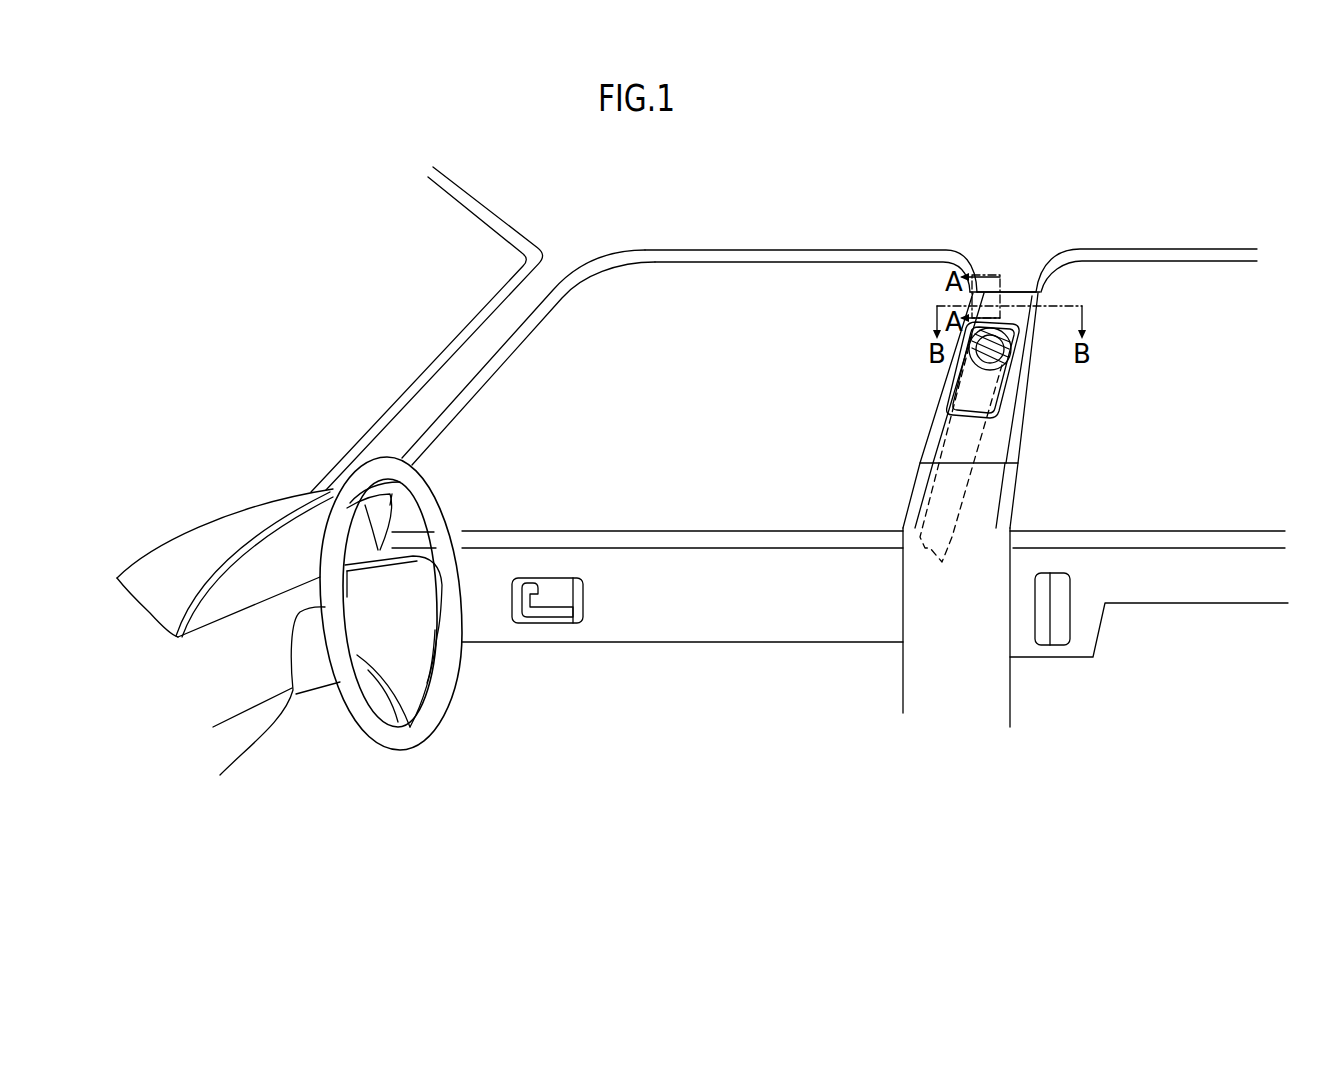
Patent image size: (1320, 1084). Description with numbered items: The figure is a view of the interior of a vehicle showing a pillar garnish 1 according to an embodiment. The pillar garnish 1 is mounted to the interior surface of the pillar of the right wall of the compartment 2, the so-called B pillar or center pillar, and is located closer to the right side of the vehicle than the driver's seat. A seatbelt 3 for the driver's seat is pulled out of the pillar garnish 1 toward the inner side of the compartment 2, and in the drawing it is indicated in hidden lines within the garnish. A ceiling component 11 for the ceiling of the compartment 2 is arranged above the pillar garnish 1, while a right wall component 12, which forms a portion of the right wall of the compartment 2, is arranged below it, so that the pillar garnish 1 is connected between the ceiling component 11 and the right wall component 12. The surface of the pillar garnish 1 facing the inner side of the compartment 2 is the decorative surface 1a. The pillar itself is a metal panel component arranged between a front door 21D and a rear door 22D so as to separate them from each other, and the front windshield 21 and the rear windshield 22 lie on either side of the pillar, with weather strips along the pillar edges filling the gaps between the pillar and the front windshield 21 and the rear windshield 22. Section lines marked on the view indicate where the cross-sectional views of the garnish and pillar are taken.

The pillar garnish 1 is at (1034, 459).
The decorative surface 1a is at (1022, 380).
The compartment 2 is at (1086, 682).
The seatbelt 3 is at (917, 481).
The ceiling component 11 is at (1022, 268).
The right wall component 12 is at (987, 547).
The front windshield 21 is at (758, 288).
The rear windshield 22 is at (1180, 278).
The front door 21D is at (700, 628).
The rear door 22D is at (1210, 585).